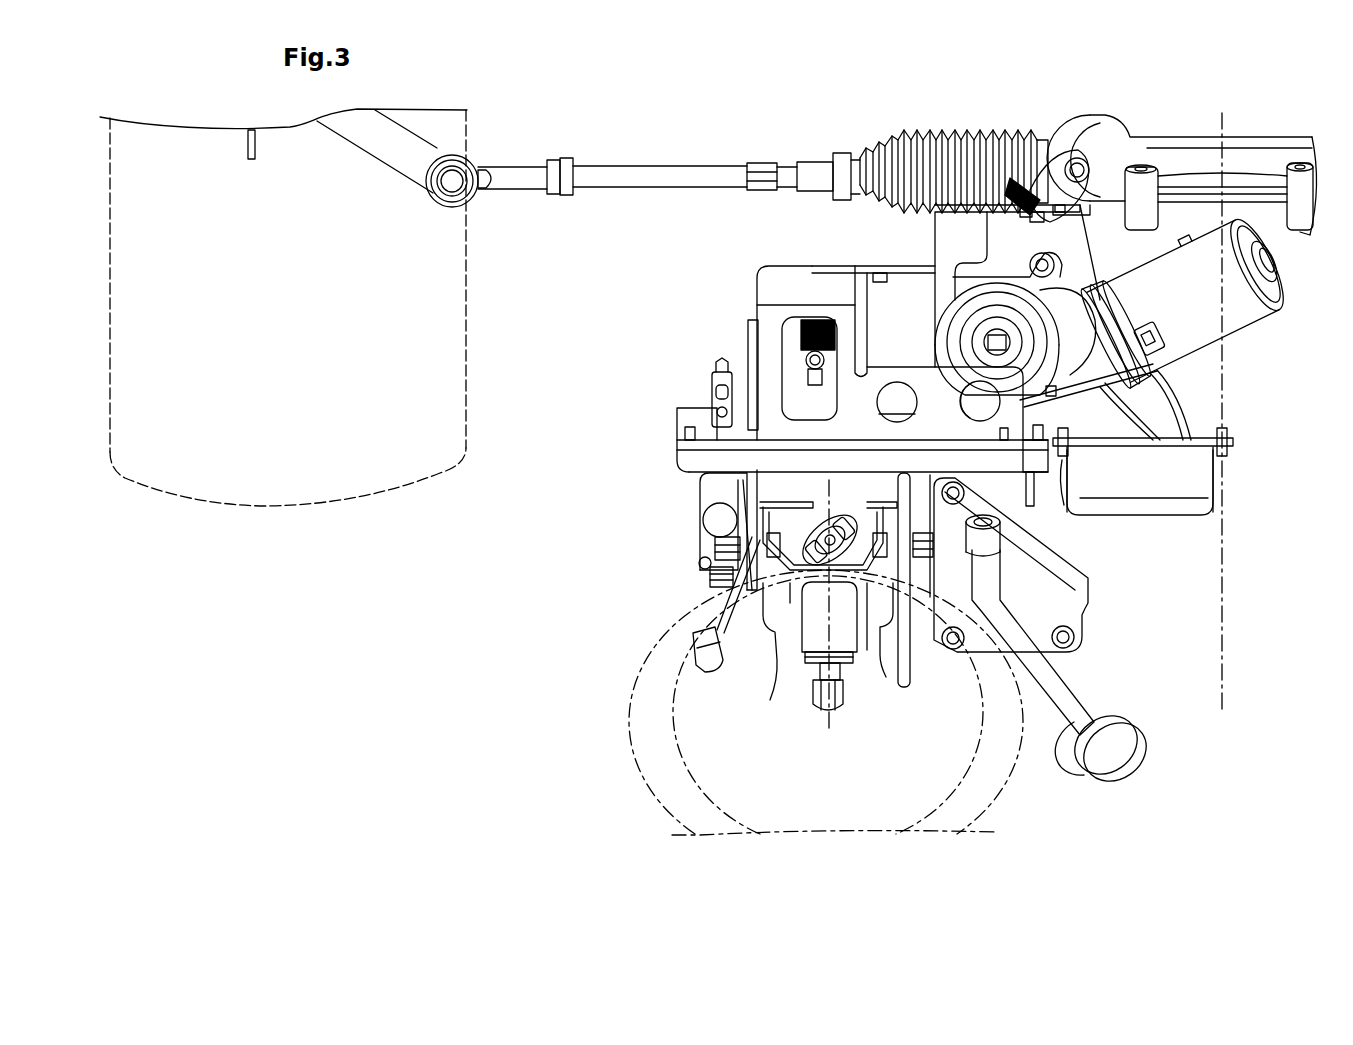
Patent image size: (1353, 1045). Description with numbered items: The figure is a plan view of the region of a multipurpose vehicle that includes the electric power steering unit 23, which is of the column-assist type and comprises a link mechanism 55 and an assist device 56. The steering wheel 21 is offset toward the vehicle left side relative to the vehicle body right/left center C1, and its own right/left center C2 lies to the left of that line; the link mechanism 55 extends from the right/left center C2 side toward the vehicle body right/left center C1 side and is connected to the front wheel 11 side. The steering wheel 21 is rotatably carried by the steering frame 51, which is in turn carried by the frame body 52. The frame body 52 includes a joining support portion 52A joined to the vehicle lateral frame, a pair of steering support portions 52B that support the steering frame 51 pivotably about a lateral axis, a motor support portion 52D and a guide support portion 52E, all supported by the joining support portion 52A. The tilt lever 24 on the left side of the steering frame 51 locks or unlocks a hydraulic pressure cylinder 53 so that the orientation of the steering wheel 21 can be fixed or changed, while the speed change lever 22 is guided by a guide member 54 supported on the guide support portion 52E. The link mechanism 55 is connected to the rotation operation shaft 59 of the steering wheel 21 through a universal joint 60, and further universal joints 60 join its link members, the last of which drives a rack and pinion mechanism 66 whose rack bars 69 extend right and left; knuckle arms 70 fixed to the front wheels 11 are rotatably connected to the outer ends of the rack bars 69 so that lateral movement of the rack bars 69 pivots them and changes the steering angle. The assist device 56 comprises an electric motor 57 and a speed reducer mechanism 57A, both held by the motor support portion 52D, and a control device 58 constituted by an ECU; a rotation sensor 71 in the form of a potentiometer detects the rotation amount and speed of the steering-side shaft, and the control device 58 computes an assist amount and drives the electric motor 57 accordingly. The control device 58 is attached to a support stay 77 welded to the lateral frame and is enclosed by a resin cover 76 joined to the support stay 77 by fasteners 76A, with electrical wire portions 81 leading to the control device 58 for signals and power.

The front wheel 11 is at (467, 333).
The steering wheel 21 is at (633, 735).
The speed change lever 22 is at (1120, 760).
The electric power steering unit 23 is at (1258, 522).
The tilt lever 24 is at (707, 672).
The steering frame 51 is at (763, 620).
The frame body 52 is at (667, 457).
The joining support portion 52A is at (687, 412).
The steering support portion 52B is at (712, 572).
The motor support portion 52D is at (947, 232).
The guide support portion 52E is at (930, 618).
The hydraulic pressure cylinder 53 is at (707, 492).
The guide member 54 is at (1073, 595).
The link mechanism 55 is at (912, 298).
The assist device 56 is at (1247, 383).
The electric motor 57 is at (1253, 315).
The speed reducer mechanism 57A is at (947, 320).
The control device 58 is at (1100, 513).
The rotation operation shaft 59 is at (837, 680).
The universal joint 60 is at (1058, 147).
The rack and pinion mechanism 66 is at (860, 116).
The rack bar 69 is at (657, 166).
The knuckle arm 70 is at (373, 152).
The rotation sensor 71 is at (1073, 385).
The cover 76 is at (1139, 507).
The fastener 76A is at (1067, 450).
The support stay 77 is at (1066, 441).
The electrical wire portion 81 is at (1140, 360).
The vehicle body right/left center C1 is at (1224, 425).
The right/left center of the steering wheel C2 is at (831, 622).